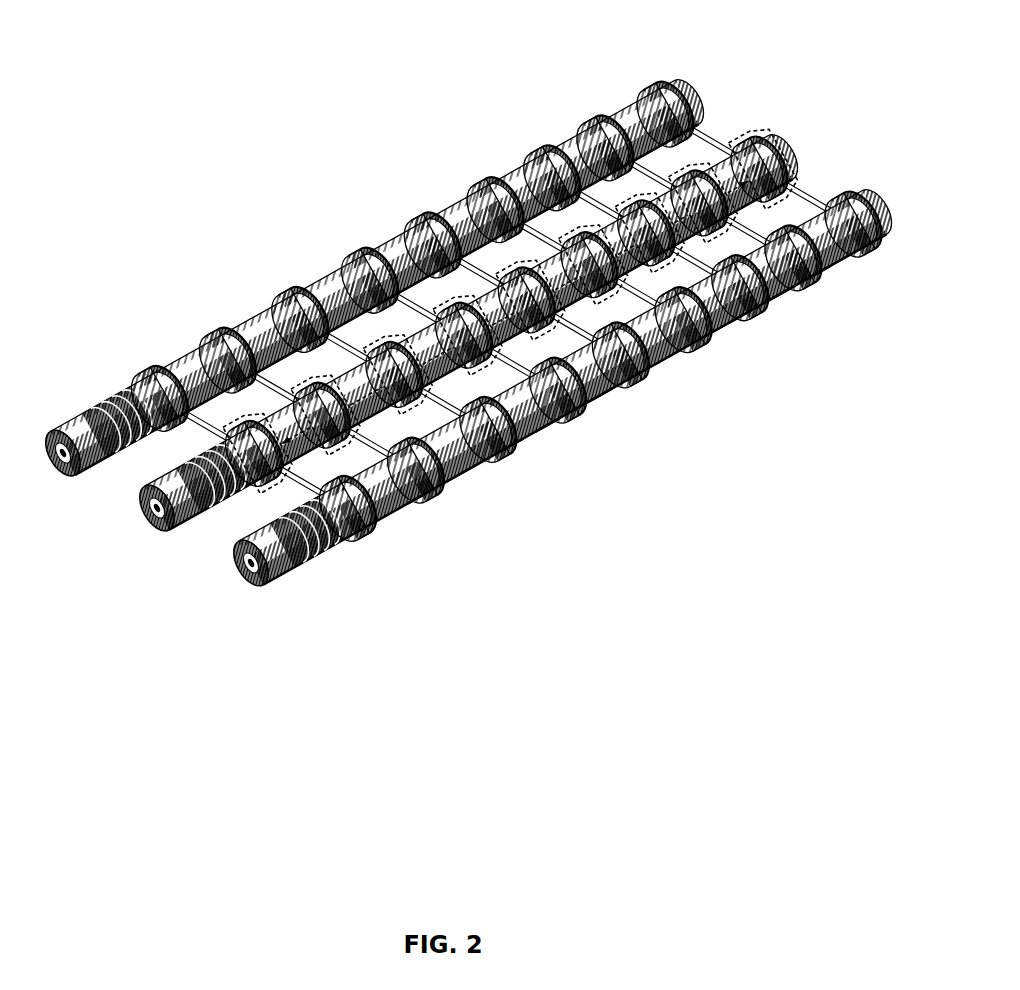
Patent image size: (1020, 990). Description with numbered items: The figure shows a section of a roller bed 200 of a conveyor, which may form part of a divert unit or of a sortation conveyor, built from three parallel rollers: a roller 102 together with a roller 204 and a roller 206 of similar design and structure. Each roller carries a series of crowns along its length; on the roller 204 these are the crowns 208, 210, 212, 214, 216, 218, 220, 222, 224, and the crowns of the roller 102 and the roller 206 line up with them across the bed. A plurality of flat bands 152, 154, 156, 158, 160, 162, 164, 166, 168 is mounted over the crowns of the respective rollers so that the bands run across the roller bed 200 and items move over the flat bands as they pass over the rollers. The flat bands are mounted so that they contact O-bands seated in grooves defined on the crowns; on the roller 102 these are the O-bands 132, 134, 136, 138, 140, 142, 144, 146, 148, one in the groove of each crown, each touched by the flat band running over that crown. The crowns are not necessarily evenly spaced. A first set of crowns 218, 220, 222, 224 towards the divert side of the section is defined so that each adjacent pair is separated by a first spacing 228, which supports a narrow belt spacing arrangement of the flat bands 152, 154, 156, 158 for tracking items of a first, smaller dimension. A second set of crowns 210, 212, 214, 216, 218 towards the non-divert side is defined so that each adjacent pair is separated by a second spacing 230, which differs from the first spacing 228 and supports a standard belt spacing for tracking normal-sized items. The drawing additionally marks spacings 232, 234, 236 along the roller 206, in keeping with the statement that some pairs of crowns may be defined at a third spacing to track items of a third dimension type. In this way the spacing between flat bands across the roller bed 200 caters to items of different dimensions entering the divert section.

The roller bed 200 is at (148, 100).
The roller 102 is at (58, 428).
The roller 204 is at (172, 485).
The roller 206 is at (223, 525).
The O-band 132 is at (636, 100).
The O-band 134 is at (583, 133).
The O-band 136 is at (536, 160).
The O-band 138 is at (471, 192).
The O-band 140 is at (406, 237).
The O-band 142 is at (344, 277).
The O-band 144 is at (274, 310).
The O-band 146 is at (204, 353).
The O-band 148 is at (131, 392).
The flat band 152 is at (833, 187).
The flat band 154 is at (777, 203).
The flat band 156 is at (697, 133).
The flat band 158 is at (658, 280).
The flat band 160 is at (627, 290).
The flat band 162 is at (577, 403).
The flat band 164 is at (462, 380).
The flat band 166 is at (380, 400).
The flat band 168 is at (300, 497).
The crown 208 is at (250, 424).
The crown 210 is at (313, 385).
The crown 212 is at (382, 346).
The crown 214 is at (452, 308).
The crown 216 is at (519, 265).
The crown 218 is at (583, 227).
The crown 220 is at (642, 196).
The crown 222 is at (696, 164).
The crown 224 is at (763, 146).
The first spacing 228 is at (740, 310).
The second spacing 230 is at (600, 385).
The spacer sleeve 232 is at (545, 420).
The spacer sleeve 234 is at (510, 443).
The spacer sleeve 236 is at (418, 492).